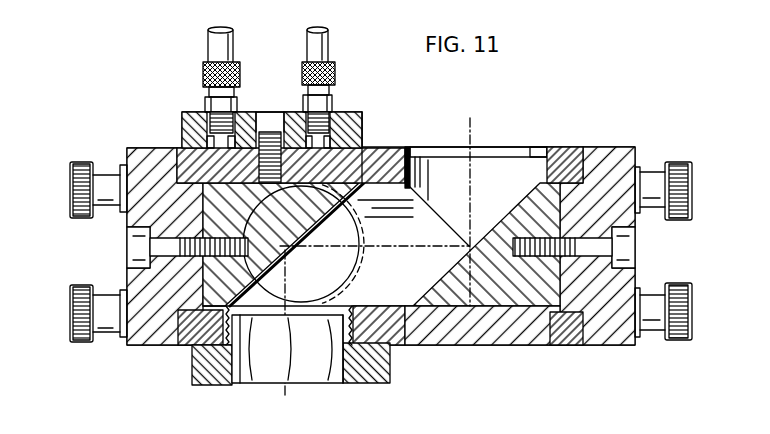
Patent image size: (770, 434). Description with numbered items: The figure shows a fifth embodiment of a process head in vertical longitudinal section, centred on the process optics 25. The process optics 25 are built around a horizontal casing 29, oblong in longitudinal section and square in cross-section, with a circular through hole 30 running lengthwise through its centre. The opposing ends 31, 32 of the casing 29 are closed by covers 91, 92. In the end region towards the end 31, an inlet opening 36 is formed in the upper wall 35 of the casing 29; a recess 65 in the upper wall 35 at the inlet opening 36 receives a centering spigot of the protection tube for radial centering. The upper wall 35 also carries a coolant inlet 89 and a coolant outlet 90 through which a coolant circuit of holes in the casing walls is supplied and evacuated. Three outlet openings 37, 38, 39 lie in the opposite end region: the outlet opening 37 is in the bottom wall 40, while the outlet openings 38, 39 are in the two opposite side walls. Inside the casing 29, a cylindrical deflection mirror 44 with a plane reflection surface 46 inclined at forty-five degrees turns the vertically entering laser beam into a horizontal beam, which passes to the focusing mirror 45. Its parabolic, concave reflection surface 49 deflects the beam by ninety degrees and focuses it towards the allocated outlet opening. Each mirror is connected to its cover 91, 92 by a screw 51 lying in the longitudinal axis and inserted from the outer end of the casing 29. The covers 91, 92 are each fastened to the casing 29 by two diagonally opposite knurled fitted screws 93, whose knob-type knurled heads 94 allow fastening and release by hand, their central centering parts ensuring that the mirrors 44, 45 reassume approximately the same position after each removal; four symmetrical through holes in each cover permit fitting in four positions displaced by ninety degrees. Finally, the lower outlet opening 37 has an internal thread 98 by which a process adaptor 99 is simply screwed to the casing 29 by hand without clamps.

The process optics 25 is at (602, 113).
The casing 29 is at (516, 332).
The circular through hole 30 is at (435, 226).
The end of casing 31 is at (590, 148).
The end of casing 32 is at (174, 330).
The upper wall 35 is at (376, 150).
The inlet opening 36 is at (500, 158).
The outlet opening 37 is at (334, 345).
The outlet opening 38 is at (286, 370).
The outlet opening 39 is at (290, 368).
The bottom wall 40 is at (468, 346).
The deflection mirror 44 is at (545, 312).
The focusing mirror 45 is at (300, 226).
The plane reflection surface 46 is at (491, 230).
The parabolic reflection surface 49 is at (347, 216).
The screw 51 is at (135, 248).
The recess 65 is at (535, 150).
The coolant inlet 89 is at (212, 46).
The coolant outlet 90 is at (318, 45).
The cover 91 is at (152, 165).
The cover 92 is at (620, 166).
The knurled fitted screw 93 is at (106, 176).
The knurled head 94 is at (80, 193).
The internal thread 98 is at (226, 360).
The process adaptor 99 is at (378, 346).